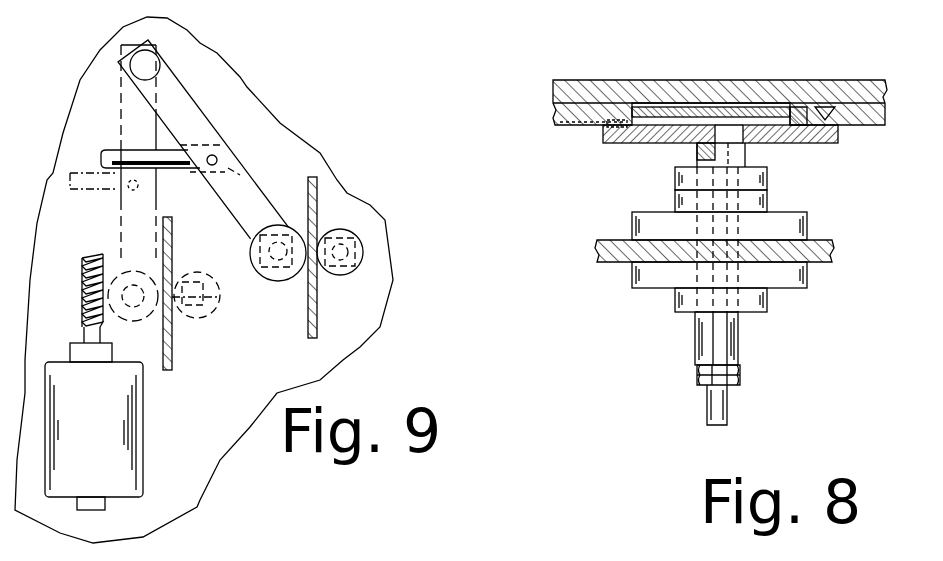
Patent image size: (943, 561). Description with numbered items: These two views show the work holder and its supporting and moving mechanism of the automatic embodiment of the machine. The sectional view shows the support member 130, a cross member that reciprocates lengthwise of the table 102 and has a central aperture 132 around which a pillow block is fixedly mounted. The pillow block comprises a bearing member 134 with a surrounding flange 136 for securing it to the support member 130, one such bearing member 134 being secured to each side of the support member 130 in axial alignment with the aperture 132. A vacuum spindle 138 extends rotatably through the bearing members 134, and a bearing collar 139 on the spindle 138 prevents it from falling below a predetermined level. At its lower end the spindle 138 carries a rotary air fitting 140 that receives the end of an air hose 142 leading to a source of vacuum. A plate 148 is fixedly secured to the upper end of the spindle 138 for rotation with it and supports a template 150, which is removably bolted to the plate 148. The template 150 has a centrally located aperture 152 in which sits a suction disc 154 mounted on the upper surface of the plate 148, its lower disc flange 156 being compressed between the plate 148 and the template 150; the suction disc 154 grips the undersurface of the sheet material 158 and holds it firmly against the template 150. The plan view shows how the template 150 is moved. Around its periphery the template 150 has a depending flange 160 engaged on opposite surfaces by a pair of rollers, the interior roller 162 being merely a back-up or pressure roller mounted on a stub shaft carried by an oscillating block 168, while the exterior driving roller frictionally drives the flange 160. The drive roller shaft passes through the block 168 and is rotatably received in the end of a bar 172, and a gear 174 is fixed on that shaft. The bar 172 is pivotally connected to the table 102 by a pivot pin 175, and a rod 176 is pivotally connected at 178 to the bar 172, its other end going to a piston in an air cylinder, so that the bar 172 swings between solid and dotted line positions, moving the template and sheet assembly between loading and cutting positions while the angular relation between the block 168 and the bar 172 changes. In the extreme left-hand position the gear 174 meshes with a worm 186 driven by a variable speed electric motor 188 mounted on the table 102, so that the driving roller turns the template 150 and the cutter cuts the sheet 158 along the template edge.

In FIG. 9, the table 102 is at (343, 358).
In FIG. 8, the support member 130 is at (600, 252).
In FIG. 8, the central aperture 132 is at (742, 266).
In FIG. 8, the bearing member 134 is at (767, 203).
In FIG. 8, the surrounding flange 136 is at (632, 225).
In FIG. 8, the vacuum spindle 138 is at (740, 335).
In FIG. 8, the bearing collar 139 is at (675, 175).
In FIG. 8, the rotary air fitting 140 is at (740, 377).
In FIG. 8, the air hose 142 is at (707, 410).
In FIG. 8, the plate 148 is at (790, 145).
In FIG. 8, the template 150 is at (553, 108).
In FIG. 8, the aperture 152 is at (808, 122).
In FIG. 8, the suction disc 154 is at (668, 108).
In FIG. 8, the lower disc flange 156 is at (603, 125).
In FIG. 8, the sheet material 158 is at (812, 106).
In FIG. 9, the depending flange 160 is at (322, 186).
In FIG. 9, the interior roller 162 is at (218, 293).
In FIG. 9, the oscillating block 168 is at (350, 237).
In FIG. 9, the bar 172 is at (195, 102).
In FIG. 9, the gear 174 is at (170, 343).
In FIG. 9, the pivot pin 175 is at (150, 52).
In FIG. 9, the rod 176 is at (138, 147).
In FIG. 9, the pivotal connection 178 is at (216, 158).
In FIG. 9, the worm 186 is at (80, 268).
In FIG. 9, the electric motor 188 is at (143, 455).